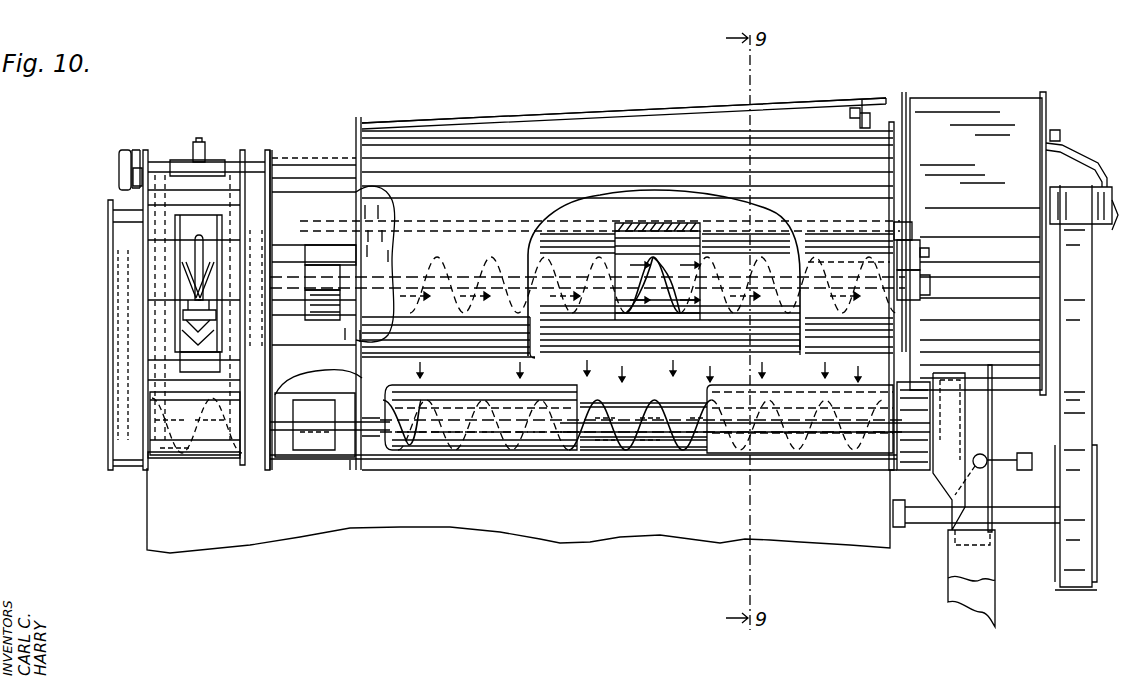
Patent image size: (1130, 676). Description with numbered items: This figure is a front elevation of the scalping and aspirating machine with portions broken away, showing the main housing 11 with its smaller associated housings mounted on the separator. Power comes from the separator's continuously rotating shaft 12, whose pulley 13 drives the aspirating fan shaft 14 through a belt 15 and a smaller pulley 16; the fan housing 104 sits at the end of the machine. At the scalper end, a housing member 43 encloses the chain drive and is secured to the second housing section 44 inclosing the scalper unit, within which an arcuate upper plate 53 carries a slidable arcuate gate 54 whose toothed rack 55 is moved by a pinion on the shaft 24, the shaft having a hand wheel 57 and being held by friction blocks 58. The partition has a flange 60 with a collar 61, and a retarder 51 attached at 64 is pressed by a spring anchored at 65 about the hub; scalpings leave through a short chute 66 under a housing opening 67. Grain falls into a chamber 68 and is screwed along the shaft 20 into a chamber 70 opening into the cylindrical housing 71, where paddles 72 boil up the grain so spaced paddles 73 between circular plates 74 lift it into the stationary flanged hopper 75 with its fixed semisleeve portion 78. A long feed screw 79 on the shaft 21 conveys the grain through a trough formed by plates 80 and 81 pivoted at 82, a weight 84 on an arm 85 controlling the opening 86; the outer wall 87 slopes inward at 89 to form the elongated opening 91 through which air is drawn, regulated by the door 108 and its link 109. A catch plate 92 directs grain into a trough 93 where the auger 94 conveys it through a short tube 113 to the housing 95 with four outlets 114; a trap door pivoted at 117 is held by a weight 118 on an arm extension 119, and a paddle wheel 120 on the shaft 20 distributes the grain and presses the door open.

The main housing 11 is at (455, 150).
The continuously rotating shaft 12 is at (1036, 516).
The pulley 13 is at (1058, 590).
The aspirating fan shaft 14 is at (1085, 222).
The belt 15 is at (1078, 412).
The smaller pulley 16 is at (1055, 226).
The shaft 20 is at (636, 432).
The shaft 21 is at (700, 280).
The shaft 24 is at (137, 152).
The housing member 43 is at (138, 448).
The second housing section 44 is at (210, 452).
The retarder 51 is at (196, 316).
The arcuate upper plate 53 is at (248, 172).
The arcuate gate 54 is at (228, 165).
The toothed rack 55 is at (200, 141).
The hand wheel 57 is at (121, 160).
The friction blocks 58 is at (133, 178).
The flange 60 is at (180, 225).
The collar 61 is at (190, 290).
The attachment point of retarder plate 64 is at (190, 268).
The anchor point of spring 65 is at (196, 244).
The short chute 66 is at (188, 375).
The housing opening 67 is at (190, 342).
The chamber 68 is at (180, 440).
The chamber or pocket 70 is at (350, 470).
The cylindrical chamber or housing 71 is at (305, 178).
The paddles 72 is at (322, 442).
The spaced paddles 73 is at (355, 386).
The circular plates 74 is at (370, 190).
The stationary flanged hopper 75 is at (318, 262).
The fixed semisleeve portion 78 is at (328, 315).
The feed screw 79 is at (650, 255).
The side wall or plate 80 is at (598, 325).
The side wall or plate 81 is at (655, 322).
The pivots 82 is at (896, 225).
The weight 84 is at (930, 255).
The arm 85 is at (917, 243).
The opening 86 is at (695, 328).
The outer wall 87 is at (849, 251).
The sloping lower end of outer wall 89 is at (862, 345).
The elongated opening 91 is at (765, 345).
The catch plate 92 is at (528, 422).
The trough 93 is at (385, 445).
The feed screw or auger 94 is at (622, 432).
The chamber or housing 95 is at (982, 407).
The fan housing 104 is at (965, 104).
The door 108 is at (805, 100).
The link 109 is at (880, 110).
The short tube 113 is at (922, 462).
The outlets 114 is at (992, 515).
The pivot 117 is at (990, 455).
The weight 118 is at (1018, 468).
The arm extension 119 is at (1032, 462).
The paddle wheel 120 is at (955, 465).